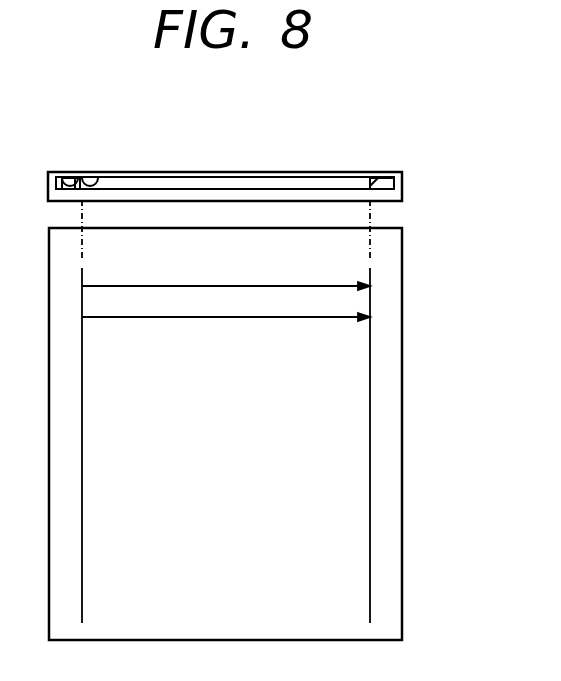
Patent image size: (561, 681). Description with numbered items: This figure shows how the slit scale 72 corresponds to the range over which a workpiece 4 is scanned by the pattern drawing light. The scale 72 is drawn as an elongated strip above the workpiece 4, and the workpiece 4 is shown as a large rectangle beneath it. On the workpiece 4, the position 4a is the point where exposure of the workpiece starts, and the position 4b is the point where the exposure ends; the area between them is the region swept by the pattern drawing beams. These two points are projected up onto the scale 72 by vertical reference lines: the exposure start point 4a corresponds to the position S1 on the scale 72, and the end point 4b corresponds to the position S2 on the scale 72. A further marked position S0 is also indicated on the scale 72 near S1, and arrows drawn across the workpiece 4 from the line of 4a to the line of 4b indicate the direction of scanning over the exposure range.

The scale 72 is at (282, 172).
The start sensor position S0 is at (72, 178).
The position on the scale S1 is at (97, 177).
The position on the scale S2 is at (380, 177).
The workpiece 4 is at (402, 453).
The position where exposure starts 4a is at (82, 455).
The position where exposure ends 4b is at (370, 523).